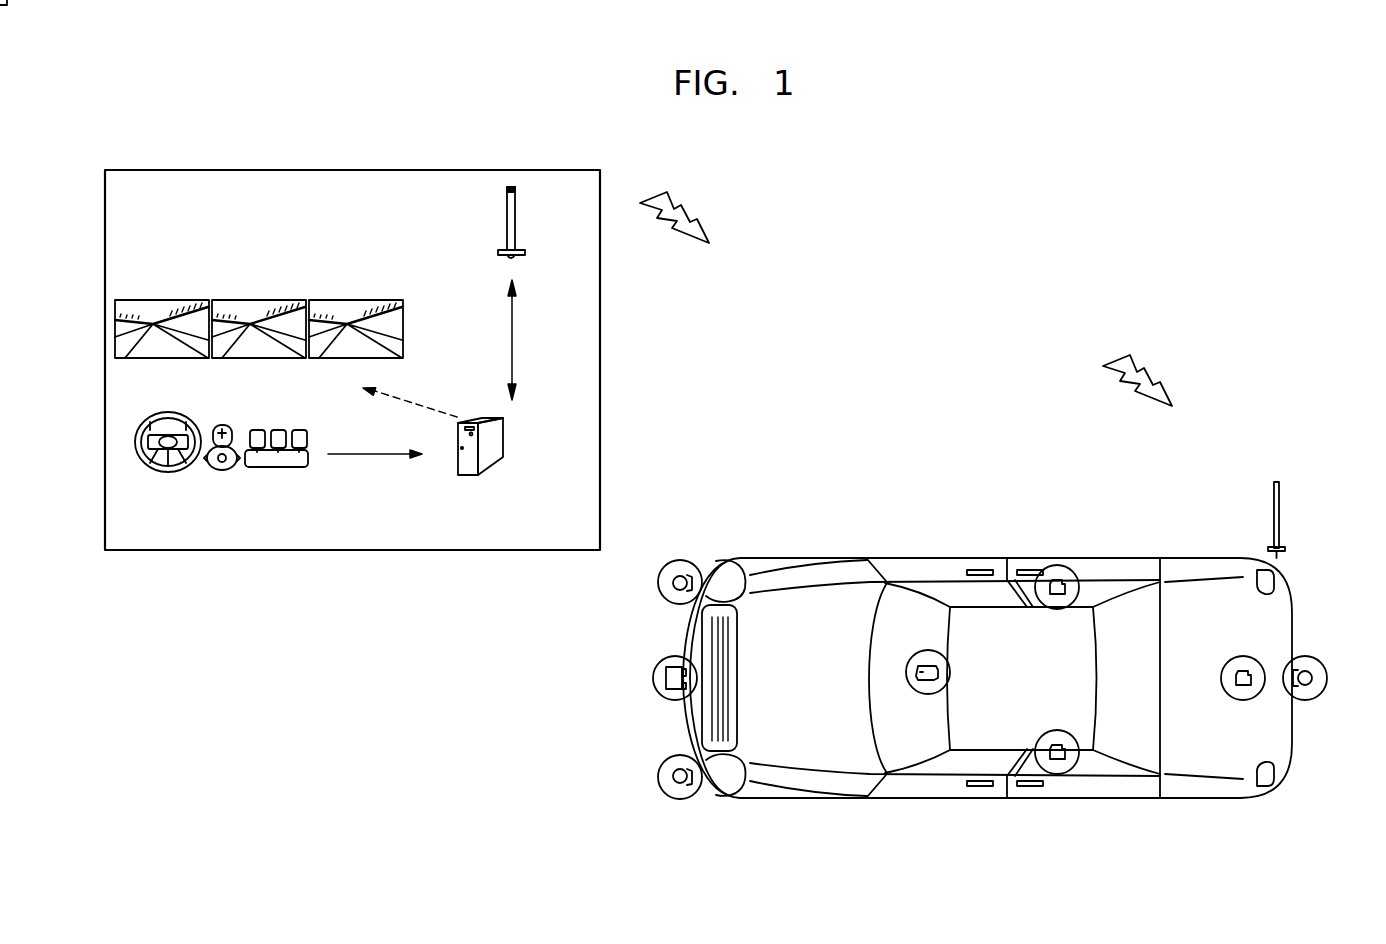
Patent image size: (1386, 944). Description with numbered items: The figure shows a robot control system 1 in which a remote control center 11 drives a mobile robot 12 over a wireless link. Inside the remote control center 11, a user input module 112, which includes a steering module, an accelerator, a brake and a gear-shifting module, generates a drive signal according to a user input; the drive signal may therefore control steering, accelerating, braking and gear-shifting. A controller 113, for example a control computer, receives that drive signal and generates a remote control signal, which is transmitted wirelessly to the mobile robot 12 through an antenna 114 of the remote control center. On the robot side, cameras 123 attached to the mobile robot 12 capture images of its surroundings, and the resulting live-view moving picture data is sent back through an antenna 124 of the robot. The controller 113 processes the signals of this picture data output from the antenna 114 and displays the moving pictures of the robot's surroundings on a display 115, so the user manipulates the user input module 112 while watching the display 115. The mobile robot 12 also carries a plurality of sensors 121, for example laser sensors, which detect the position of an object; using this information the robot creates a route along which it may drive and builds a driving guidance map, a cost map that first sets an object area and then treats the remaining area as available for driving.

The robot control system 1 is at (985, 237).
The remote control center 11 is at (433, 170).
The mobile robot 12 is at (1049, 468).
The user input module 112 is at (240, 486).
The controller 113 is at (503, 440).
The antenna 114 is at (515, 222).
The display 115 is at (348, 283).
The sensors 121 is at (663, 758).
The cameras 123 is at (1048, 731).
The antenna 124 is at (1277, 482).